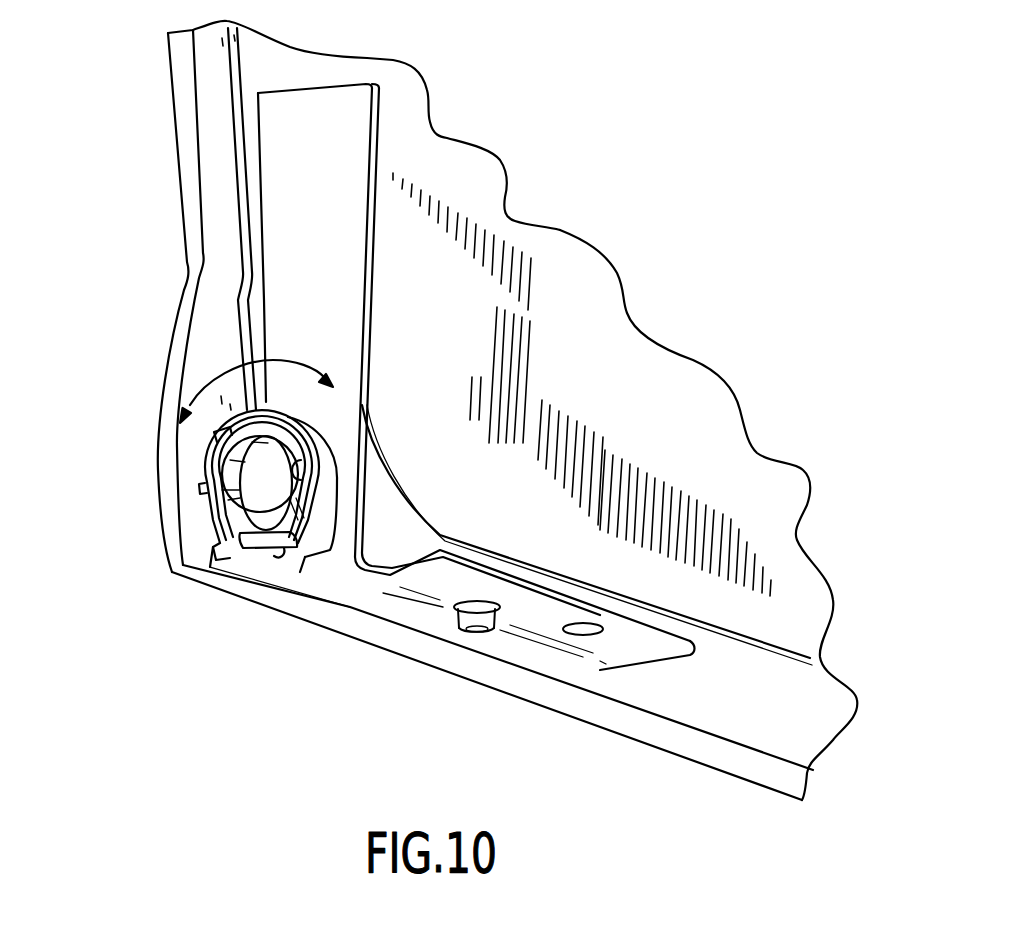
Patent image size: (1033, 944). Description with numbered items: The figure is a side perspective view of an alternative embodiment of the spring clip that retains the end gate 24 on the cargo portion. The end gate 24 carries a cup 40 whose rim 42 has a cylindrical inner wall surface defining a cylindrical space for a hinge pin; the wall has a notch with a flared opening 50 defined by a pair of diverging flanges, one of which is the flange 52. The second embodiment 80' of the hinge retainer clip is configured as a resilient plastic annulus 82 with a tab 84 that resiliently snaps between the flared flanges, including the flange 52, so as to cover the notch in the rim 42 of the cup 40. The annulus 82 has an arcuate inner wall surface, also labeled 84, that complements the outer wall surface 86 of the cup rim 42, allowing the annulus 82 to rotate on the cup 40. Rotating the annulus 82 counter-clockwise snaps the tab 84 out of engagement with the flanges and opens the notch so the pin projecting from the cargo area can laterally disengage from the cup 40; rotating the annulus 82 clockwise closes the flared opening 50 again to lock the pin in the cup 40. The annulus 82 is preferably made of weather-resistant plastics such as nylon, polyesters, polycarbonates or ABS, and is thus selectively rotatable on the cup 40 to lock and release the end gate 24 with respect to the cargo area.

The end gate 24 is at (162, 145).
The second embodiment of the hinge retainer clip 80' is at (339, 429).
The resilient plastic annulus 82 is at (332, 483).
The tab 84 is at (300, 470).
The outer wall surface 86 is at (304, 511).
The cup 40 is at (212, 483).
The rim 42 is at (235, 512).
The flared opening 50 is at (222, 547).
The diverging flange 52 is at (285, 547).